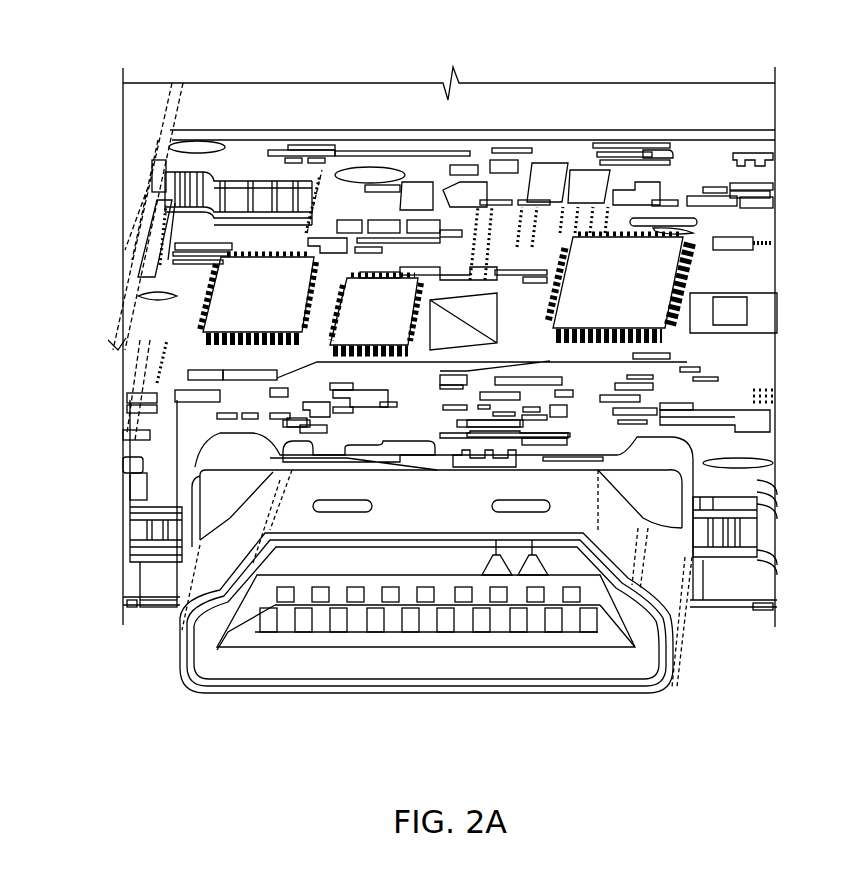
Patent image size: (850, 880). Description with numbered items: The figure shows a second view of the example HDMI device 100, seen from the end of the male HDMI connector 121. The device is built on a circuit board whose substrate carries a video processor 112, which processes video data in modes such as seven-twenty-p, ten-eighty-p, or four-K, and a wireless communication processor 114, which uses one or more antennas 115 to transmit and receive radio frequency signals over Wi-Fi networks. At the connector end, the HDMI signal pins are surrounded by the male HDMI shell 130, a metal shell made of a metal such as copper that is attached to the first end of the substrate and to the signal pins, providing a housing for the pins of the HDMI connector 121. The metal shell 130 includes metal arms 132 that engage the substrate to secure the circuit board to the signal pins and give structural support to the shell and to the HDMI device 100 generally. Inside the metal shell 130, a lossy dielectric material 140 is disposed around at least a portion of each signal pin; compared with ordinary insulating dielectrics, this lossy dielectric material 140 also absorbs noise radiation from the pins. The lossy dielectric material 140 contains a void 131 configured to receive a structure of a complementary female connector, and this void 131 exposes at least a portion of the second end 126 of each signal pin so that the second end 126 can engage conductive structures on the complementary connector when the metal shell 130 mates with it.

The HDMI device 100 is at (148, 43).
The video processor 112 is at (598, 294).
The wireless communication processor 114 is at (232, 309).
The antennas 115 is at (356, 322).
The male HDMI connector 121 is at (545, 490).
The second end 126 is at (317, 604).
The metal shell 130 is at (210, 560).
The void 131 is at (237, 614).
The metal arms 132 is at (208, 450).
The lossy dielectric material 140 is at (230, 667).